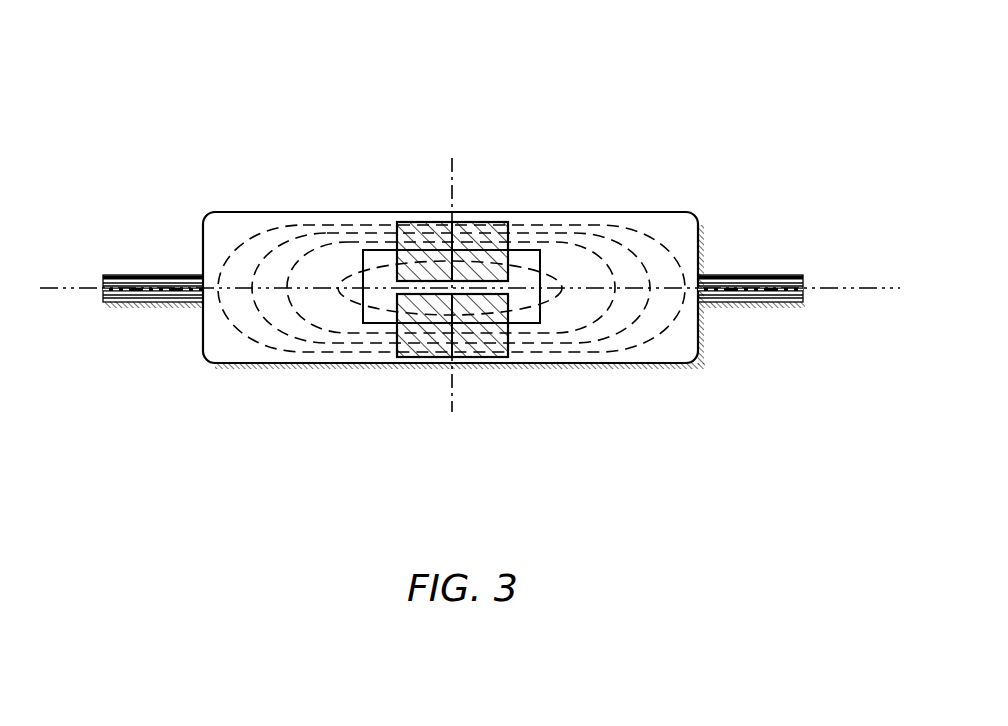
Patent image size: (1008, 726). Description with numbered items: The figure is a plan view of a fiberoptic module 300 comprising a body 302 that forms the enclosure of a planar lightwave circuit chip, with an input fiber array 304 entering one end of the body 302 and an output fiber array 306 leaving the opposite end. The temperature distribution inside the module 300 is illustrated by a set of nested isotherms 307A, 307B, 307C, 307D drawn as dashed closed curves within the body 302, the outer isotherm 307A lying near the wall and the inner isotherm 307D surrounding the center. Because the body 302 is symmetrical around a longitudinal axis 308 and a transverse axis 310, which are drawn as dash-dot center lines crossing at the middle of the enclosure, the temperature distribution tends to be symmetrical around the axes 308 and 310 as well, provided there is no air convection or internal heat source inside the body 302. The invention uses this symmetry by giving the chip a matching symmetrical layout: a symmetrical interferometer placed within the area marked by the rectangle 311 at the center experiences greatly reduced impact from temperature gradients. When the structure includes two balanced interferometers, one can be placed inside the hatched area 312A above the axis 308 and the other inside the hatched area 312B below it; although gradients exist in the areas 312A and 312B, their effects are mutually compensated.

The fiberoptic module 300 is at (574, 52).
The body 302 is at (611, 212).
The input fiber array 304 is at (120, 275).
The output fiber array 306 is at (760, 275).
The isotherm 307A is at (237, 242).
The isotherm 307B is at (315, 235).
The isotherm 307C is at (390, 240).
The isotherm 307D is at (560, 273).
The axis 308 is at (850, 288).
The axis 310 is at (456, 402).
The rectangle 311 is at (372, 323).
The rectangle 312A is at (467, 222).
The rectangle 312B is at (428, 357).